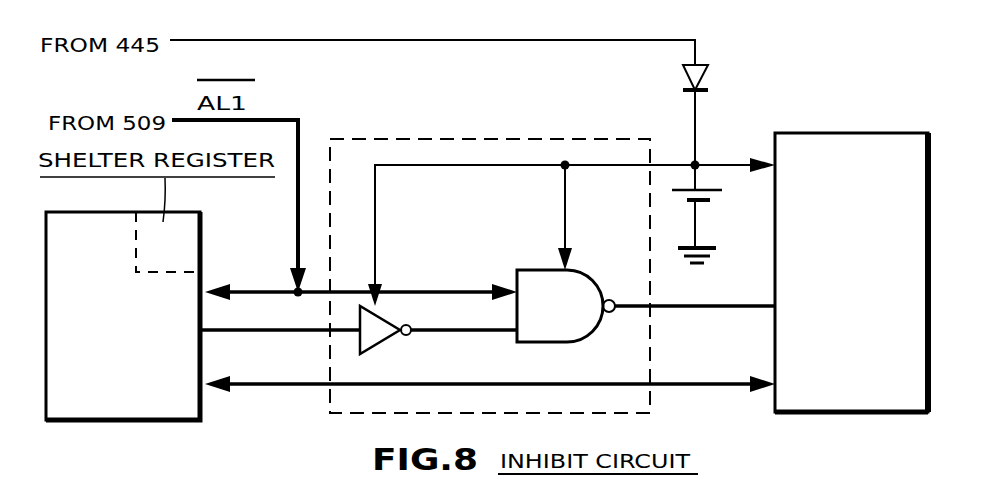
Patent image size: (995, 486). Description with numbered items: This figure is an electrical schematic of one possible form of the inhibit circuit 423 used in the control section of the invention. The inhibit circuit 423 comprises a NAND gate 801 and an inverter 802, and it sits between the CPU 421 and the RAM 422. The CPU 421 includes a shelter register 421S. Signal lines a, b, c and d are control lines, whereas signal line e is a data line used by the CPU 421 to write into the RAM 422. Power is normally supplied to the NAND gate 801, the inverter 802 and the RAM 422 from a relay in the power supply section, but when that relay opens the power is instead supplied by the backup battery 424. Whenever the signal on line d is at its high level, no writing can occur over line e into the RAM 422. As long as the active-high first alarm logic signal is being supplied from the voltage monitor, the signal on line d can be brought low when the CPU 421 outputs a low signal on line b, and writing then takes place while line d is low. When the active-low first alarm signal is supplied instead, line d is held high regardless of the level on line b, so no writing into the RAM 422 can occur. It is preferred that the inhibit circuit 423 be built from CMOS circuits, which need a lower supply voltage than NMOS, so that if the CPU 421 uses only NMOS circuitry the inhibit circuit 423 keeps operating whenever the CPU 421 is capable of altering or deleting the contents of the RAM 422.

The CPU 421 is at (125, 407).
The shelter register 421S is at (200, 238).
The RAM 422 is at (882, 138).
The inhibit circuit 423 is at (505, 140).
The backup battery 424 is at (718, 195).
The NAND gate 801 is at (535, 265).
The inverter 802 is at (378, 345).
The signal line a is at (458, 288).
The signal line b is at (285, 333).
The signal line c is at (462, 326).
The signal line d is at (718, 308).
The signal line e is at (293, 392).